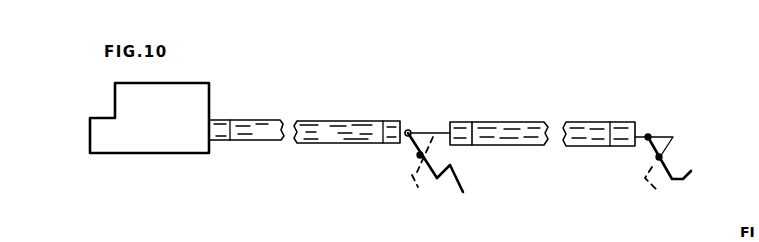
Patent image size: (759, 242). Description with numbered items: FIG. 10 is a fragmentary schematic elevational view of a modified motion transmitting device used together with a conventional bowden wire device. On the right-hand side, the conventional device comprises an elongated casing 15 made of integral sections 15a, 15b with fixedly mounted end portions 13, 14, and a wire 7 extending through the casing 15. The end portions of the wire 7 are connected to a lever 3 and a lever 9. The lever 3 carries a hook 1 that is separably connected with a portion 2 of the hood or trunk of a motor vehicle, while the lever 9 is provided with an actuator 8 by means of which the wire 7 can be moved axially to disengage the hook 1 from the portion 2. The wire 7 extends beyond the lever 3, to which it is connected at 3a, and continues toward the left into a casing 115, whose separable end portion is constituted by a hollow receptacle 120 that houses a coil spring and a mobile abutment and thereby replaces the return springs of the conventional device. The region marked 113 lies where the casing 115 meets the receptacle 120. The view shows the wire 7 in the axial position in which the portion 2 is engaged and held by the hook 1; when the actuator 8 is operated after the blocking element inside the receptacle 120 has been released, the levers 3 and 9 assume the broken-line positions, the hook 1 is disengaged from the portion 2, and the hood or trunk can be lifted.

The hollow receptacle 120 is at (140, 135).
The bore 113 is at (208, 146).
The casing 115 is at (240, 142).
The wire 7 is at (267, 140).
The connection of wire to lever 3a is at (412, 131).
The lever 3 is at (424, 133).
The portion of hood or trunk 2 is at (451, 167).
The hook 1 is at (437, 178).
The end portion of casing 13 is at (462, 123).
The casing section 15a is at (517, 125).
The casing section 15b is at (583, 130).
The elongated casing 15 is at (578, 147).
The end portion of casing 14 is at (622, 125).
The lever 9 is at (664, 161).
The actuator 8 is at (687, 178).